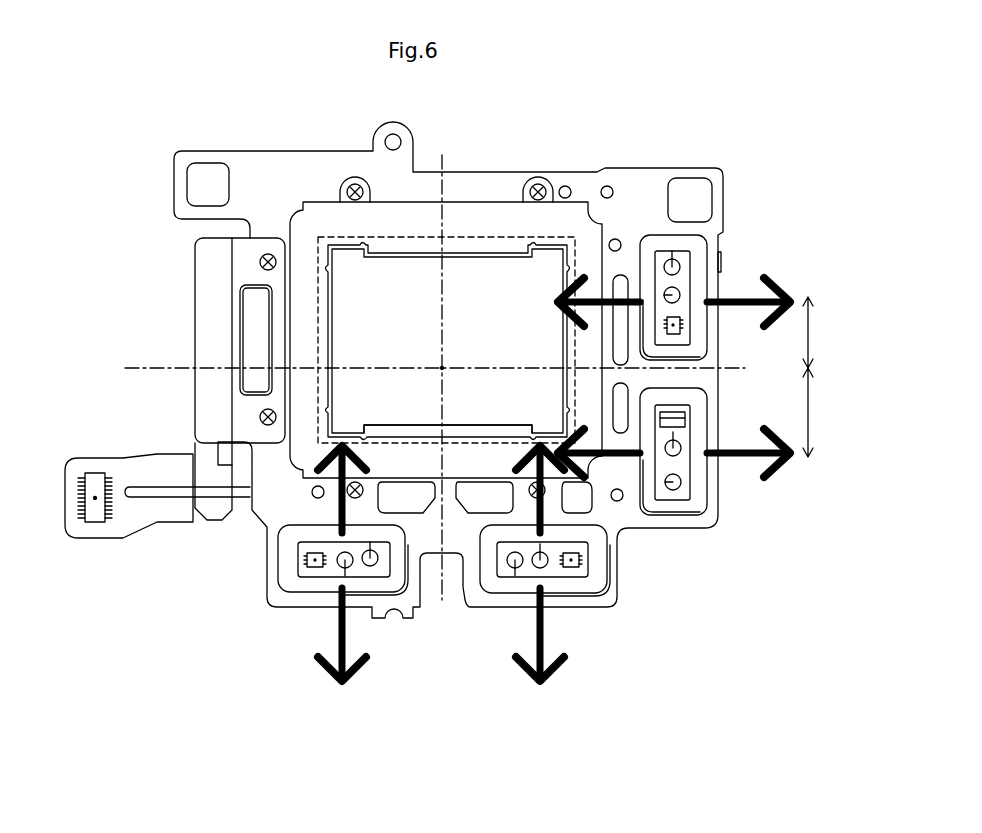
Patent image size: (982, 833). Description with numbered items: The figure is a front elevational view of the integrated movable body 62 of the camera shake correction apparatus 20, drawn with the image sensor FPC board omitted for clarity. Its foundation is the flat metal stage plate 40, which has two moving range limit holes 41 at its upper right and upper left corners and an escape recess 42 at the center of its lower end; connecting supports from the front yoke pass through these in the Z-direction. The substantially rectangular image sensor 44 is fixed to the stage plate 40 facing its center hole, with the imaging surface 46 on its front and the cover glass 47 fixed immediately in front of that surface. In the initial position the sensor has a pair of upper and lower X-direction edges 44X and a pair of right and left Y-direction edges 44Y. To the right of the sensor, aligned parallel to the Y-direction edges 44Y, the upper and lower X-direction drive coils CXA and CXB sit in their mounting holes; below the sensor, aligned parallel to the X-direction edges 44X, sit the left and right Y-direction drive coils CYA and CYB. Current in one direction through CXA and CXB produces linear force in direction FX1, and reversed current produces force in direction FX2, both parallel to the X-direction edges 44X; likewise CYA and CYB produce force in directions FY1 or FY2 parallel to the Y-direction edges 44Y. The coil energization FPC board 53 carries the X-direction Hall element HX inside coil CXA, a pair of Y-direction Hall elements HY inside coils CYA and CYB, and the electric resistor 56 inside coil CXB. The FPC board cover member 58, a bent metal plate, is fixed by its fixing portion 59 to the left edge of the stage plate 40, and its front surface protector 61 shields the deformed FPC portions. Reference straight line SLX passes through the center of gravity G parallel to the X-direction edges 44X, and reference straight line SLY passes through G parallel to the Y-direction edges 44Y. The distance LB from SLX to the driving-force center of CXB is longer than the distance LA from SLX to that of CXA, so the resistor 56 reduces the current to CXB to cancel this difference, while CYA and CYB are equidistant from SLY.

The camera shake correction apparatus 20 is at (108, 100).
The stage plate 40 is at (243, 147).
The moving range limit holes 41 is at (207, 165).
The escape recess 42 is at (463, 583).
The image sensor 44 is at (418, 235).
The X-direction edges 44X is at (387, 233).
The Y-direction edges 44Y is at (607, 230).
The imaging surface 46 is at (448, 341).
The cover glass 47 is at (477, 265).
The coil energization FPC board 53 is at (125, 460).
The electric resistor 56 is at (685, 410).
The FPC board cover member 58 is at (210, 292).
The fixing portion 59 is at (240, 255).
The front surface protector 61 is at (202, 327).
The integrated movable body 62 is at (140, 167).
The X-direction drive coil CXA is at (700, 247).
The X-direction drive coil CXB is at (693, 507).
The Y-direction drive coil CYA is at (288, 582).
The Y-direction drive coil CYB is at (597, 578).
The X-direction Hall element HX is at (682, 327).
The Y-direction Hall elements HY is at (315, 568).
The drive force direction FX1 is at (748, 295).
The drive force direction FX2 is at (602, 325).
The drive force direction FY1 is at (337, 513).
The drive force direction FY2 is at (345, 637).
The center of gravity G is at (447, 364).
The reference straight line SLX is at (147, 368).
The reference straight line SLY is at (442, 307).
The double-arrow line LA is at (822, 332).
The double-arrow line LB is at (822, 412).